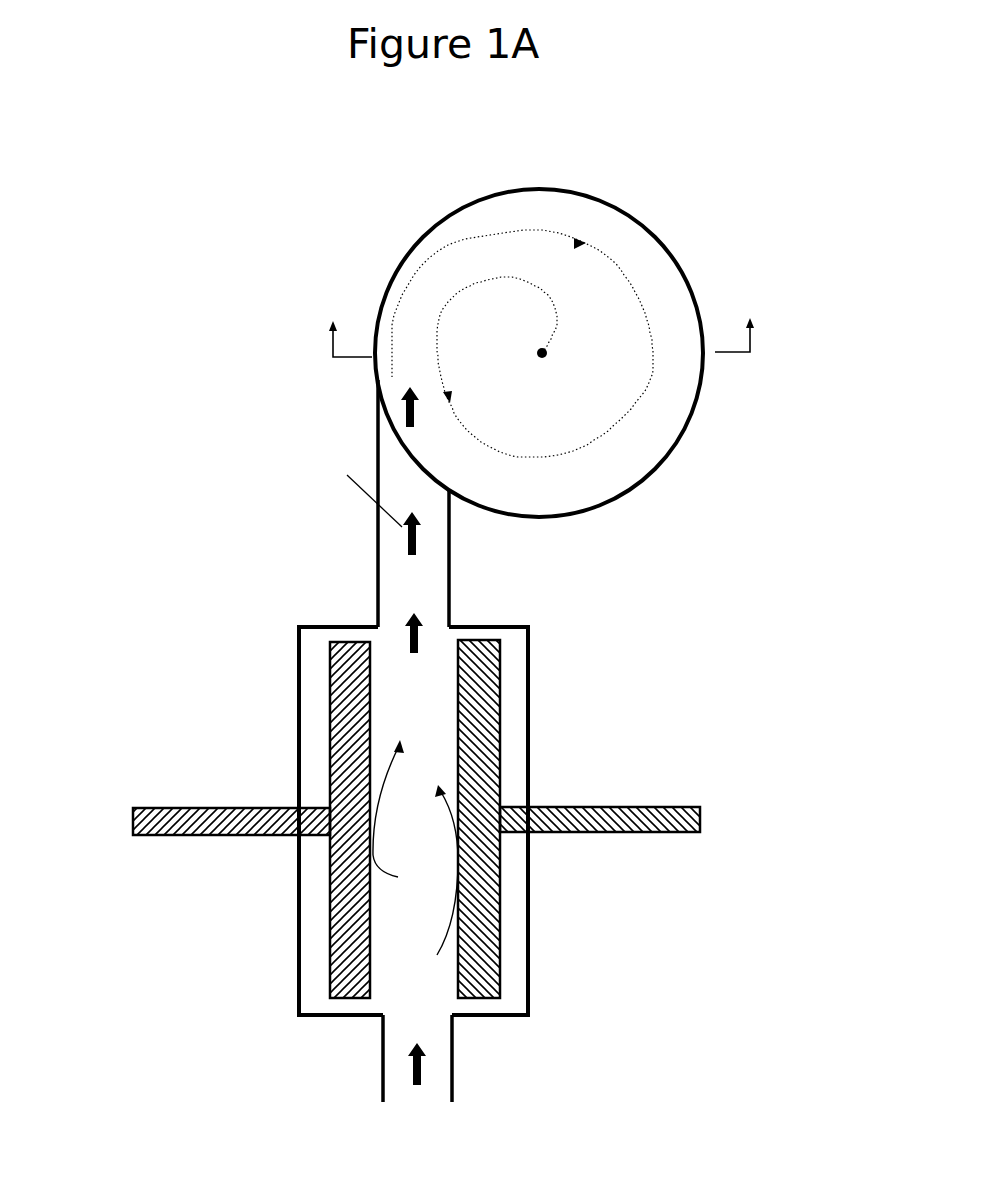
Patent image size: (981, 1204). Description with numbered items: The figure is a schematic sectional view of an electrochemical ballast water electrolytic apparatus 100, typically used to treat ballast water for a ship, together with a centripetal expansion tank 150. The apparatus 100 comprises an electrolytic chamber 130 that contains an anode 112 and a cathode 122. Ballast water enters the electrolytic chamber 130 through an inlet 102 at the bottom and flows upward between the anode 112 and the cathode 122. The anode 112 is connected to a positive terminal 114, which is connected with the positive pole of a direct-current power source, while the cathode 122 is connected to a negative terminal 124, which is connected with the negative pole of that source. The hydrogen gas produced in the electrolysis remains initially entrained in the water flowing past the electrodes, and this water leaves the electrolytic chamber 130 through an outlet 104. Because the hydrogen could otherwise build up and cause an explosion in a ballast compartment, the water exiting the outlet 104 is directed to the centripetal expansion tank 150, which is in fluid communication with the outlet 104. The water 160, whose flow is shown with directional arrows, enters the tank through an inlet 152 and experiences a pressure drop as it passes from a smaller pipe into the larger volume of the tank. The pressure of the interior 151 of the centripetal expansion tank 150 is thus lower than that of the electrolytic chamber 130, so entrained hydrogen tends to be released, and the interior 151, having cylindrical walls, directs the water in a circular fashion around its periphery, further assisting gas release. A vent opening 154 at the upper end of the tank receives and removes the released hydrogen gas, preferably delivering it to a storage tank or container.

The electrochemical ballast water electrolytic apparatus 100 is at (198, 564).
The inlet 102 is at (382, 1075).
The outlet 104 is at (449, 574).
The anode 112 is at (330, 678).
The positive terminal 114 is at (200, 835).
The cathode 122 is at (500, 720).
The negative terminal 124 is at (647, 832).
The electrolytic chamber 130 is at (528, 652).
The centripetal expansion tank 150 is at (397, 257).
The interior 151 is at (642, 437).
The inlet 152 is at (376, 397).
The vent opening 154 is at (545, 350).
The water 160 is at (528, 227).